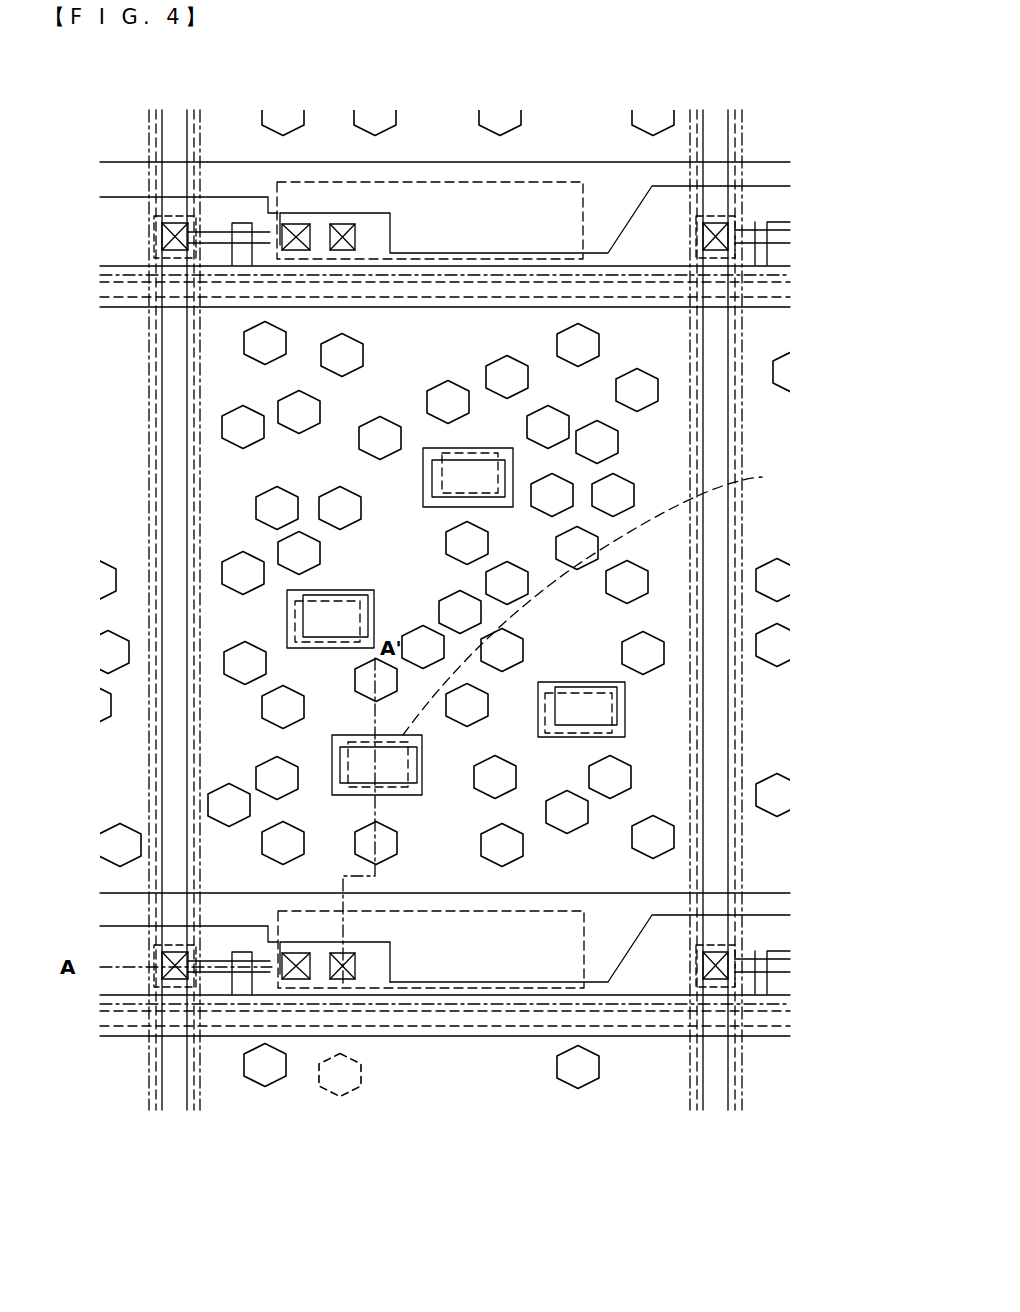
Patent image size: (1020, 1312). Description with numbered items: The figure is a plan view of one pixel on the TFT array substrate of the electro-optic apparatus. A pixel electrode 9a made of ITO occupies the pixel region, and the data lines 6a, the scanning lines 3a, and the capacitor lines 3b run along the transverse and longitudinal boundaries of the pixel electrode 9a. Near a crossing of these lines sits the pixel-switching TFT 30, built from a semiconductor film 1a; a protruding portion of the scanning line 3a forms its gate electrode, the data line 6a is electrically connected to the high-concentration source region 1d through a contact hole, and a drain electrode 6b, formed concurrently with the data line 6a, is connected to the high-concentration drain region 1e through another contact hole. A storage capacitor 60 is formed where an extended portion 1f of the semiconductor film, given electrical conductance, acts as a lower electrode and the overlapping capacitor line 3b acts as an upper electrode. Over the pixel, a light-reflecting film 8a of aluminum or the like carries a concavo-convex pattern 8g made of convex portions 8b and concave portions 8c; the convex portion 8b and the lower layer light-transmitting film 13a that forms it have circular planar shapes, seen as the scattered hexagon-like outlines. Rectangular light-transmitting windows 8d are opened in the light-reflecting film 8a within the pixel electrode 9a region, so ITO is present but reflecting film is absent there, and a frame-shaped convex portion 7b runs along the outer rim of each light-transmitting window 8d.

The data line 6a is at (203, 102).
The scanning line 3a is at (90, 262).
The capacitor line 3b is at (90, 158).
The light-reflecting film 8a is at (700, 607).
The convex portion 8b is at (637, 385).
The concave portion 8c is at (643, 440).
The concavo-convex pattern 8g is at (747, 391).
The light-transmitting window 8d is at (467, 472).
The pixel electrode 9a is at (707, 557).
The lower layer light-transmitting film 13a is at (617, 453).
The frame-shaped convex portion 7b is at (463, 448).
The semiconductor film 1a is at (297, 987).
The high-concentration source region 1d is at (207, 968).
The high-concentration drain region 1e is at (270, 972).
The pixel-switching TFT 30 is at (262, 980).
The drain electrode 6b is at (367, 967).
The extended portion 1f is at (587, 948).
The storage capacitor 60 is at (533, 945).